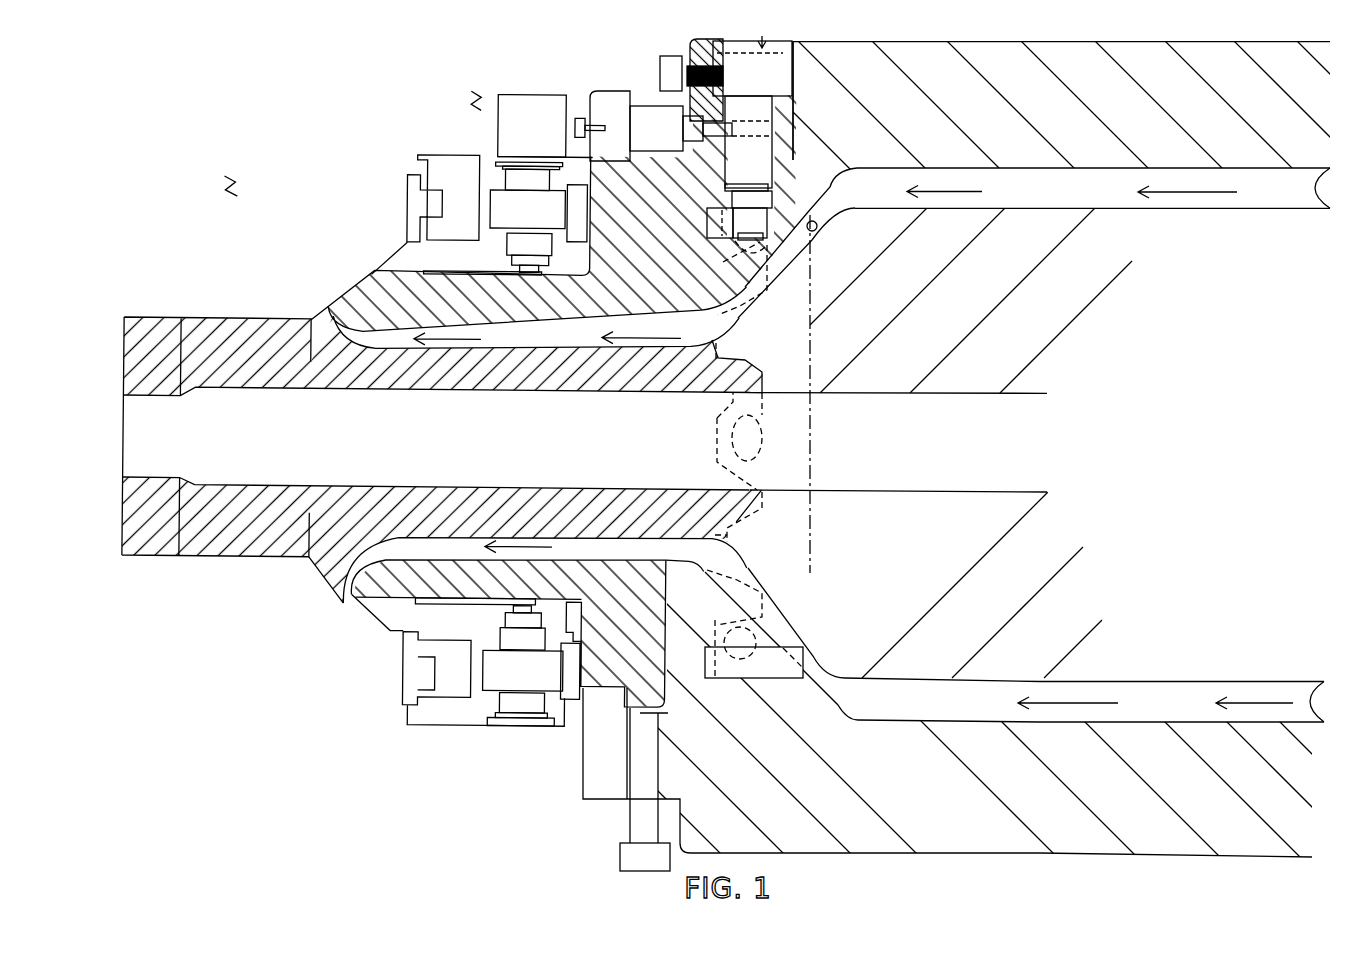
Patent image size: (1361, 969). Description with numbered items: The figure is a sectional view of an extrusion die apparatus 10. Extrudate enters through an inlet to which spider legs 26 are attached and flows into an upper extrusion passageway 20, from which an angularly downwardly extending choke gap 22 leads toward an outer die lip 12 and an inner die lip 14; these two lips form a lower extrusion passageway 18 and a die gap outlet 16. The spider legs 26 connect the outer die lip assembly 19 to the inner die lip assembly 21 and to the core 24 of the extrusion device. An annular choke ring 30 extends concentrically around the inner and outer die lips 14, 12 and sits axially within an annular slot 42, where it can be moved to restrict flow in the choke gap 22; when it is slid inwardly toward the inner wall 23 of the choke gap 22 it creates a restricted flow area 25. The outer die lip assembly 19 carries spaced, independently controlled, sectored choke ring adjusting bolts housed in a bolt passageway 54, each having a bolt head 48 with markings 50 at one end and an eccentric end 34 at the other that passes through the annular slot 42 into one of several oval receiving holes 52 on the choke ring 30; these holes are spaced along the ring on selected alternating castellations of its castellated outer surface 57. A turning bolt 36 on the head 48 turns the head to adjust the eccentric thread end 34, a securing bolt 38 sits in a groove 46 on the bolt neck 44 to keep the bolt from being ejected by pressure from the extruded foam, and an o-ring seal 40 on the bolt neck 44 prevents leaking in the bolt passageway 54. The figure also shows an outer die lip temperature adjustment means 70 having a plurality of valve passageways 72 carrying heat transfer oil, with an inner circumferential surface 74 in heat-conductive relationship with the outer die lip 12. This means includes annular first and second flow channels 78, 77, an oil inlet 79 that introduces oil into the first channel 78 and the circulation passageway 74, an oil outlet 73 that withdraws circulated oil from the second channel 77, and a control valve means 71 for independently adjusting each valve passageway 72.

The extrusion die apparatus 10 is at (217, 175).
The outer die lip 12 is at (409, 321).
The inner die lip 14 is at (382, 389).
The die gap outlet 16 is at (330, 587).
The lower extrusion passageway 18 is at (532, 346).
The outer die lip assembly 19 is at (1002, 135).
The upper extrusion passageway 20 is at (1069, 200).
The inner die lip assembly 21 is at (954, 324).
The choke gap 22 is at (833, 206).
The inner wall 23 is at (787, 267).
The core 24 is at (440, 451).
The restricted flow area 25 is at (816, 222).
The spider legs 26 is at (1320, 211).
The annular choke ring 30 is at (823, 448).
The eccentric end 34 is at (733, 239).
The turning bolt 36 is at (677, 64).
The securing bolt 38 is at (718, 142).
The o-ring seal 40 is at (769, 188).
The annular slot 42 is at (707, 220).
The bolt neck 44 is at (762, 179).
The groove 46 is at (771, 131).
The bolt head 48 is at (750, 84).
The markings 50 is at (760, 30).
The oval receiving holes 52 is at (750, 278).
The bolt passageway 54 is at (703, 44).
The castellated outer surface 57 is at (740, 394).
The outer die lip temperature adjustment means 70 is at (471, 88).
The control valve means 71 is at (552, 126).
The valve passageways 72 is at (528, 178).
The oil outlet 73 is at (525, 729).
The inner circumferential surface 74 is at (462, 279).
The second flow channel 77 is at (532, 652).
The first flow channel 78 is at (539, 213).
The oil inlet 79 is at (511, 260).